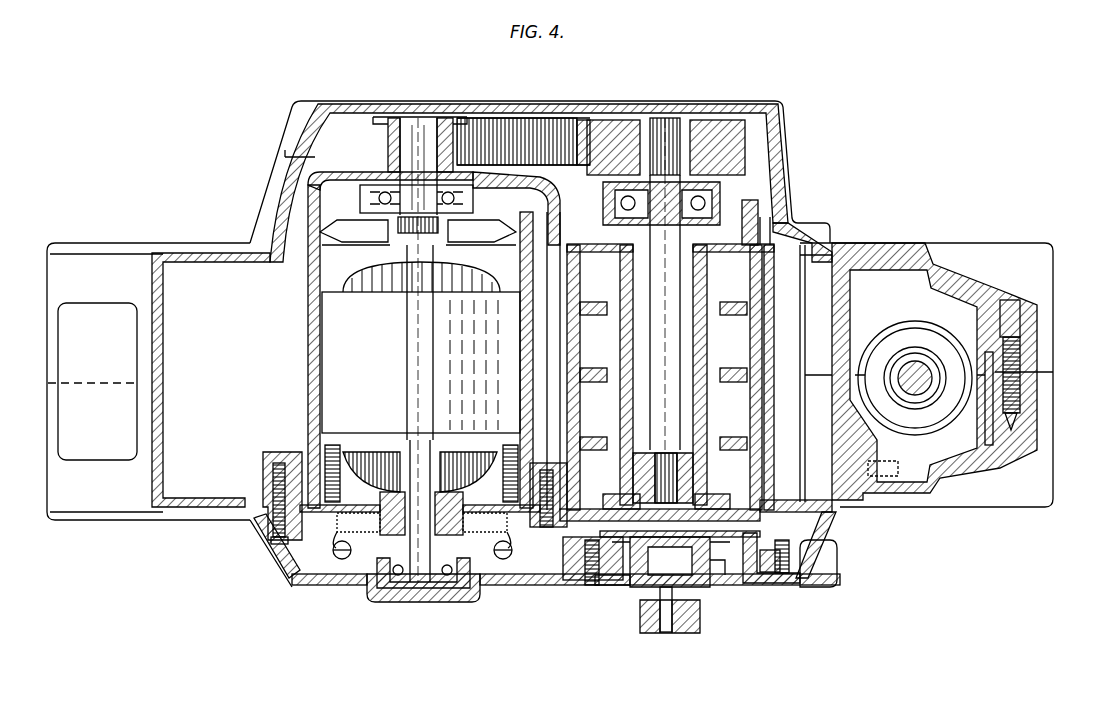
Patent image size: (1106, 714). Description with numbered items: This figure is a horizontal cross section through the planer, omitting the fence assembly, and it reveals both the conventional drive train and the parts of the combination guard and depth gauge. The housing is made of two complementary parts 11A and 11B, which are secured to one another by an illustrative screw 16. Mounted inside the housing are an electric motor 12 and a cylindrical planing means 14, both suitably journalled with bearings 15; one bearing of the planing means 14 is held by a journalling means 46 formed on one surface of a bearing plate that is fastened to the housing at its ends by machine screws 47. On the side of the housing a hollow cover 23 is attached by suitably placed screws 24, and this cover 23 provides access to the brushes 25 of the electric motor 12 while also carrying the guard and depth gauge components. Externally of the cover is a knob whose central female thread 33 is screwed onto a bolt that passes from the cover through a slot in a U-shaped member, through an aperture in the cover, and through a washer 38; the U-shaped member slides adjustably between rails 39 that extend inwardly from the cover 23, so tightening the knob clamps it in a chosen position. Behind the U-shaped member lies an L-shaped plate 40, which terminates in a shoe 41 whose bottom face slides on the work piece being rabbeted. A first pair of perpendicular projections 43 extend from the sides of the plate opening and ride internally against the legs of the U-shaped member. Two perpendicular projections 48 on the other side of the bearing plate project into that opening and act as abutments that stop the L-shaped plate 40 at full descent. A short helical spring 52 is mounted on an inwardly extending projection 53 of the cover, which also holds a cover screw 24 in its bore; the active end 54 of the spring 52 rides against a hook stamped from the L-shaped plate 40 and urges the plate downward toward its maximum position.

The housing part 11A is at (845, 255).
The housing part 11B is at (250, 495).
The electric motor 12 is at (432, 359).
The cylindrical planing means 14 is at (730, 288).
The bearings 15 is at (715, 207).
The screw 16 is at (1010, 358).
The hollow cover 23 is at (513, 585).
The screws 24 is at (270, 550).
The brushes 25 is at (367, 588).
The female thread 33 is at (672, 633).
The washer 38 is at (707, 587).
The rails 39 is at (612, 590).
The L-shaped plate 40 is at (745, 560).
The shoe 41 is at (837, 568).
The first pair of perpendicular projections 43 is at (637, 513).
The journalling means 46 is at (707, 470).
The machine screws 47 is at (547, 530).
The perpendicular projections 48 is at (668, 472).
The helical spring 52 is at (548, 545).
The projection 53 is at (597, 582).
The active end 54 is at (713, 587).